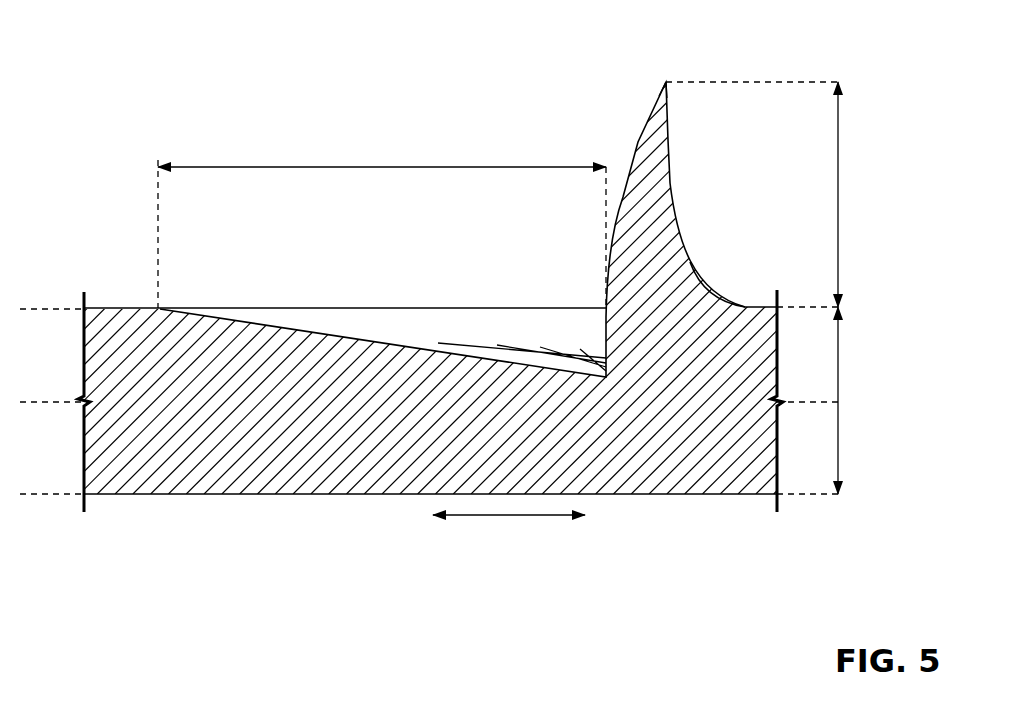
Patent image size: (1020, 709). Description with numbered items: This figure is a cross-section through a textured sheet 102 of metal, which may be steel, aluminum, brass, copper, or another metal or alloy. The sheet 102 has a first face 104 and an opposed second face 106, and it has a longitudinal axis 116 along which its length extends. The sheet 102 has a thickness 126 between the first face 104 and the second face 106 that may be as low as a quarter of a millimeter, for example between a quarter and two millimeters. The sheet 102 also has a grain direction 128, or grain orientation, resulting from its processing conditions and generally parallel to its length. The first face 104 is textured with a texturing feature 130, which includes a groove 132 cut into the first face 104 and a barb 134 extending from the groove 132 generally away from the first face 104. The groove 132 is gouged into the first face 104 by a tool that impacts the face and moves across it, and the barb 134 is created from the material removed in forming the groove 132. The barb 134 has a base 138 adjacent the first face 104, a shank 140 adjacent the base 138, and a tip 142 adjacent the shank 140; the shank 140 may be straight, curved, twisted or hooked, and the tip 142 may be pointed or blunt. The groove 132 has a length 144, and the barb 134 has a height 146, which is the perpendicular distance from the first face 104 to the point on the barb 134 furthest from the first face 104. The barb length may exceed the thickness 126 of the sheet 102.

The sheet of metal 102 is at (700, 482).
The first face 104 is at (130, 308).
The second face 106 is at (237, 495).
The longitudinal axis 116 is at (43, 403).
The thickness 126 is at (839, 396).
The grain direction 128 is at (508, 517).
The texturing feature 130 is at (673, 137).
The groove 132 is at (405, 345).
The barb 134 is at (638, 142).
The base 138 is at (646, 300).
The shank 140 is at (638, 212).
The tip 142 is at (663, 78).
The groove length 144 is at (388, 167).
The barb height 146 is at (839, 187).